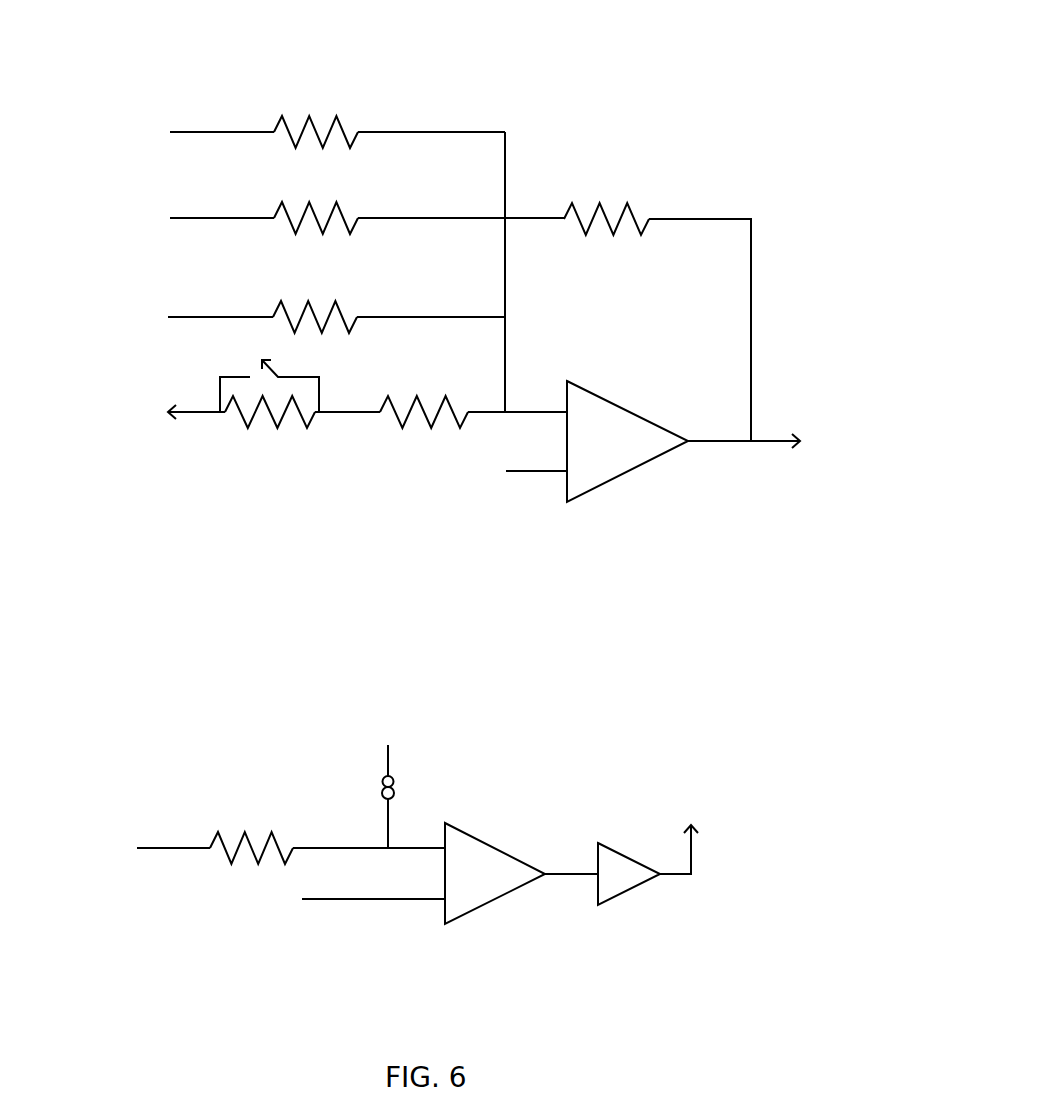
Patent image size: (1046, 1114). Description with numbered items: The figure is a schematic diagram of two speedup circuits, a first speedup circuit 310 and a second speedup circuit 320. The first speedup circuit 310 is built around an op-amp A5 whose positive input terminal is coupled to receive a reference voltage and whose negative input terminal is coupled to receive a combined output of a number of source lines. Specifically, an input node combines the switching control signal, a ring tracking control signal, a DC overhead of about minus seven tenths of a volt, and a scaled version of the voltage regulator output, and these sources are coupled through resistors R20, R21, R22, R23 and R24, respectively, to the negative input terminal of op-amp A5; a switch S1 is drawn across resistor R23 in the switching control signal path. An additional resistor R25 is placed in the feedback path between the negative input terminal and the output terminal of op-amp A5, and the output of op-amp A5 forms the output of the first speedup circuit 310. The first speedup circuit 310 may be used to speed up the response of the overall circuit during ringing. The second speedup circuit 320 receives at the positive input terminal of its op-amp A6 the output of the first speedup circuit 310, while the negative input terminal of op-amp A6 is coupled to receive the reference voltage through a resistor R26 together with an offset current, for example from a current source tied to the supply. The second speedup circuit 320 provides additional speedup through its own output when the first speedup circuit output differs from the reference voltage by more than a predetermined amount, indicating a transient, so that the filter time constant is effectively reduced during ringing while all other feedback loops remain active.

The first speedup circuit 310 is at (83, 43).
The second speedup circuit 320 is at (82, 680).
The resistor R20 is at (316, 115).
The resistor R21 is at (316, 203).
The resistor R22 is at (315, 296).
The resistor R23 is at (270, 429).
The resistor R24 is at (424, 429).
The resistor R25 is at (606, 204).
The resistor R26 is at (251, 830).
The switch S1 is at (269, 381).
The op-amp A5 is at (627, 441).
The op-amp A6 is at (495, 873).